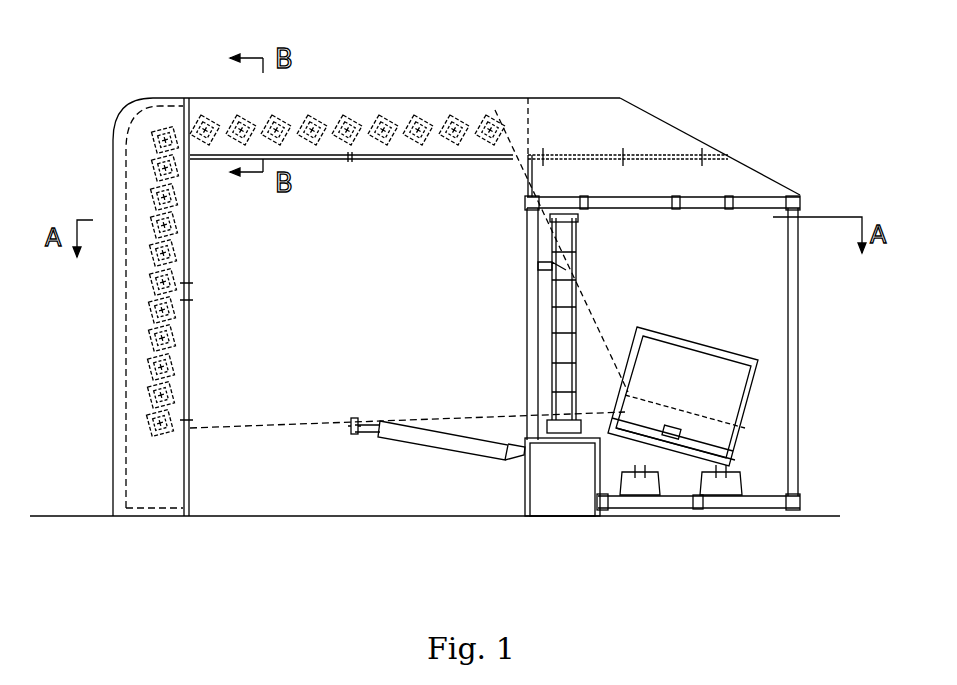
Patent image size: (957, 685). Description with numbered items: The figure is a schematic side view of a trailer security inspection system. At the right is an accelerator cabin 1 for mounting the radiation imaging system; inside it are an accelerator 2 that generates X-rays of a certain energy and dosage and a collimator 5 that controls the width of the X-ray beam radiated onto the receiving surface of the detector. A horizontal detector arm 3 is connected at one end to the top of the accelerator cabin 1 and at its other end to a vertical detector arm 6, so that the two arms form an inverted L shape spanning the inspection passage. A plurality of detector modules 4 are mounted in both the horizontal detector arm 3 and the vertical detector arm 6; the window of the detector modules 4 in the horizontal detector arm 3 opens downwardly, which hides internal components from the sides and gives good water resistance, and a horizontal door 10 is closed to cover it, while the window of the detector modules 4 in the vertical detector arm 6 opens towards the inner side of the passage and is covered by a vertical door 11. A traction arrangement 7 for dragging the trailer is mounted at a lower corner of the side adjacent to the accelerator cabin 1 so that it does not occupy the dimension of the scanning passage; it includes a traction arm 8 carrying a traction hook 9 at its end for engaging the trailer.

The accelerator cabin 1 is at (798, 430).
The accelerator 2 is at (698, 382).
The horizontal detector arm 3 is at (493, 107).
The detector module 4 is at (363, 130).
The collimator 5 is at (563, 355).
The vertical detector arm 6 is at (135, 235).
The traction arrangement 7 is at (550, 455).
The traction arm 8 is at (417, 437).
The traction hook 9 is at (355, 422).
The door 10 is at (407, 158).
The door 11 is at (188, 360).